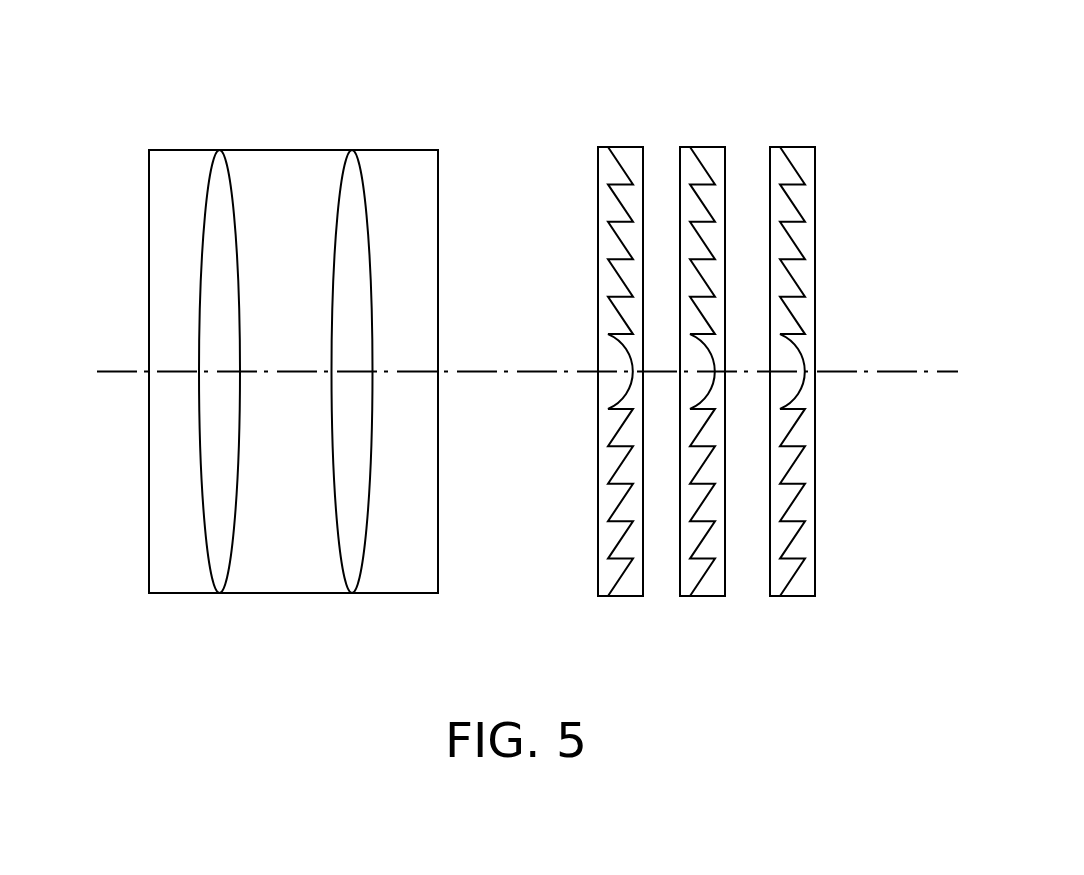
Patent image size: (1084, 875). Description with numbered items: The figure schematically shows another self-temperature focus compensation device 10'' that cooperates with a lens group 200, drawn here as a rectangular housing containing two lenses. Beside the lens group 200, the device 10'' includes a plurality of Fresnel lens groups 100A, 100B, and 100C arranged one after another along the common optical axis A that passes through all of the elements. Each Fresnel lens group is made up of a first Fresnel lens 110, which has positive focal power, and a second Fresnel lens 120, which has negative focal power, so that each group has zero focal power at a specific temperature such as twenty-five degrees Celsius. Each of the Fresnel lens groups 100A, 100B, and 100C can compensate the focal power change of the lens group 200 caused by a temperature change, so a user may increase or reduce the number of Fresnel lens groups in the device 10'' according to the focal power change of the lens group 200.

The self-temperature focus compensation device 10'' is at (753, 342).
The Fresnel lens group 100A is at (643, 138).
The Fresnel lens group 100B is at (703, 382).
The Fresnel lens group 100C is at (815, 138).
The first Fresnel lens 110 is at (688, 596).
The second Fresnel lens 120 is at (715, 596).
The lens group 200 is at (155, 167).
The optical axis A is at (925, 372).